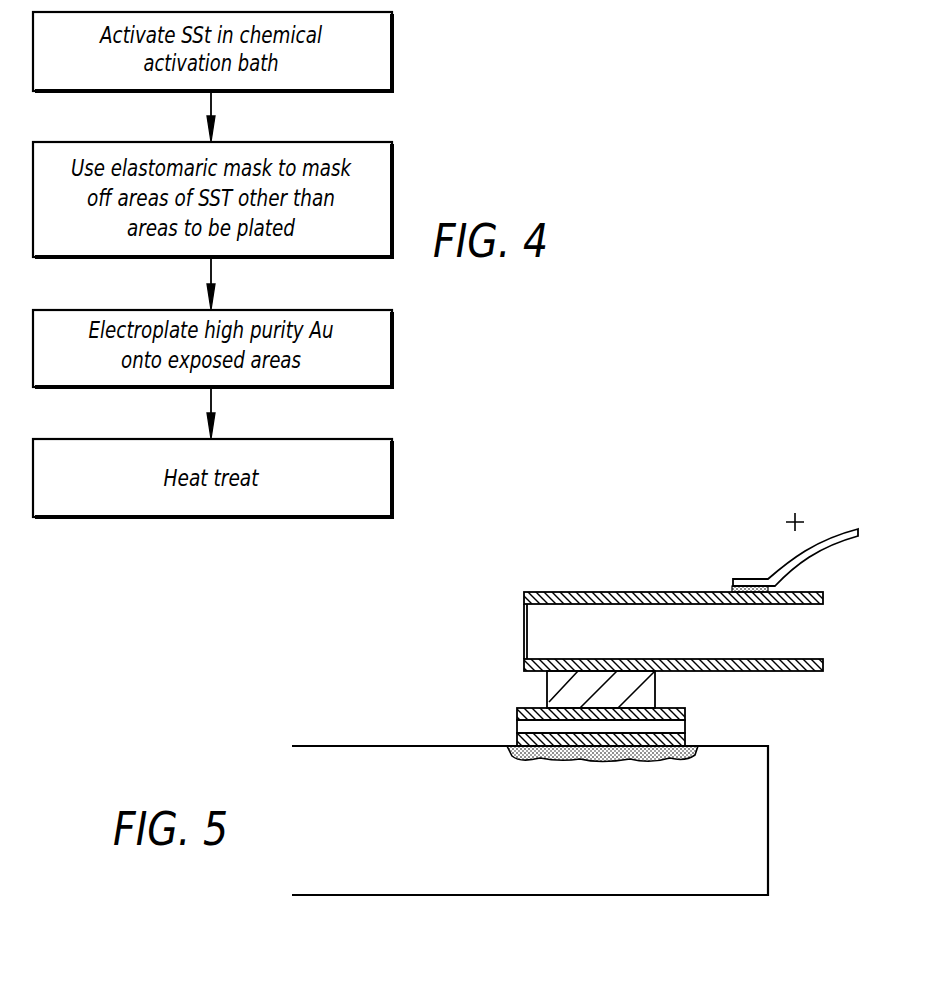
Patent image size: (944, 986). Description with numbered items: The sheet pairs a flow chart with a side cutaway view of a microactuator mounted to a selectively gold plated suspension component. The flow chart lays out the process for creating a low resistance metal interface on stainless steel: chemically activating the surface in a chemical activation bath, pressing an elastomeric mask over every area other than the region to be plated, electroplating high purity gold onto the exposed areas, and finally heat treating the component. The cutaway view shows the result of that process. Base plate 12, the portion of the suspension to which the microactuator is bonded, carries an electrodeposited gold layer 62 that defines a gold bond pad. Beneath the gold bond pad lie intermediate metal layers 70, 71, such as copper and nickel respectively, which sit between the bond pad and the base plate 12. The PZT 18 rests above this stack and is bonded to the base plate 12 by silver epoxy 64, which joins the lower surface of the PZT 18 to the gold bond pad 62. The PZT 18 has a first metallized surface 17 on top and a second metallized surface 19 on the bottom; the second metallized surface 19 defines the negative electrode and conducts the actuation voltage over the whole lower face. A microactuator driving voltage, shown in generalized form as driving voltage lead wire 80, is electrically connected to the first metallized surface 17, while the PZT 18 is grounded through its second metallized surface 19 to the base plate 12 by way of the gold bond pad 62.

The base plate 12 is at (430, 895).
The first metallized surface 17 is at (556, 594).
The PZT 18 is at (538, 632).
The second metallized surface 19 is at (530, 672).
The gold layer 62 is at (686, 714).
The silver epoxy 64 is at (657, 676).
The intermediate metal layer 70 is at (518, 738).
The intermediate metal layer 71 is at (686, 727).
The driving voltage lead wire 80 is at (838, 530).